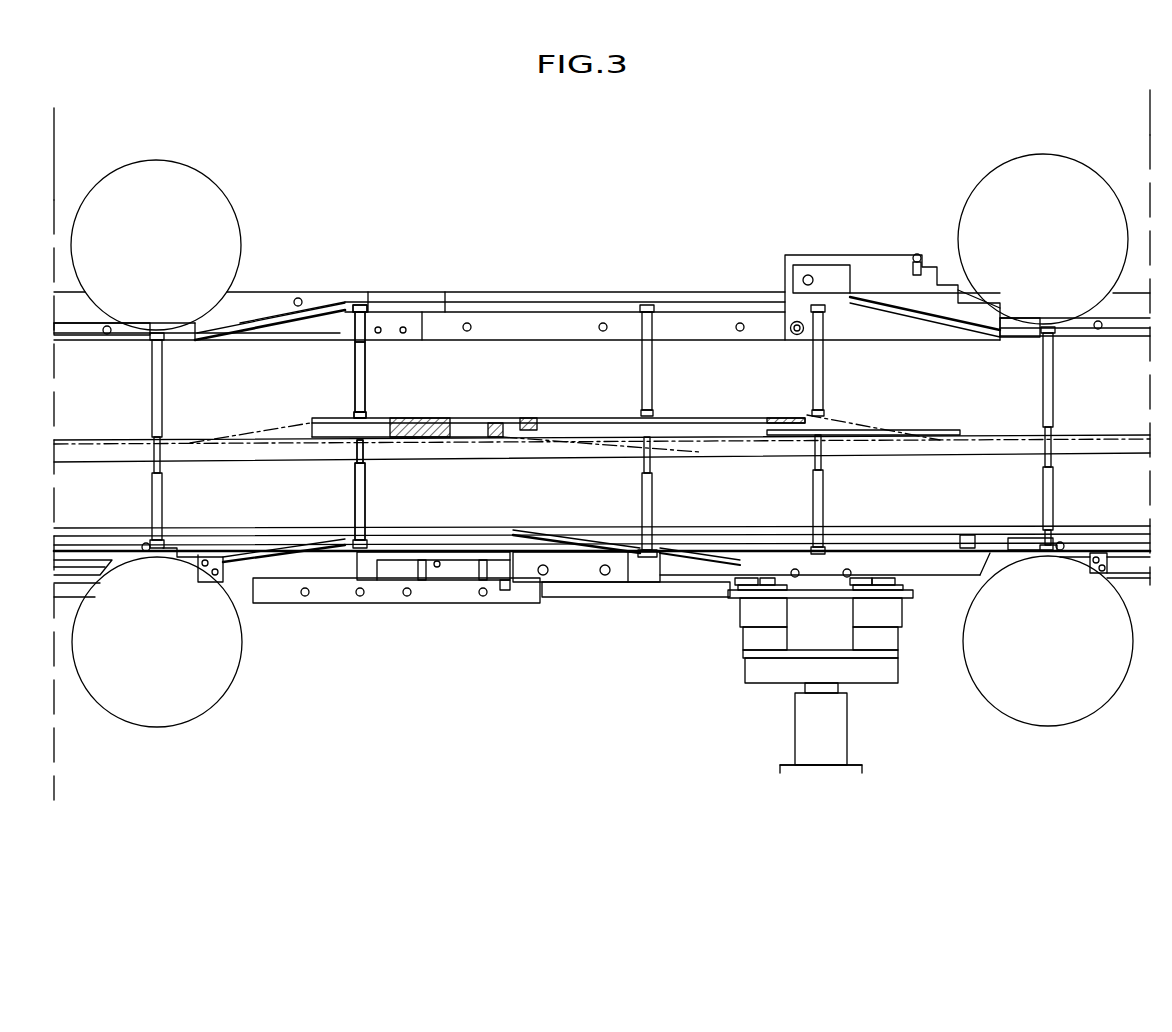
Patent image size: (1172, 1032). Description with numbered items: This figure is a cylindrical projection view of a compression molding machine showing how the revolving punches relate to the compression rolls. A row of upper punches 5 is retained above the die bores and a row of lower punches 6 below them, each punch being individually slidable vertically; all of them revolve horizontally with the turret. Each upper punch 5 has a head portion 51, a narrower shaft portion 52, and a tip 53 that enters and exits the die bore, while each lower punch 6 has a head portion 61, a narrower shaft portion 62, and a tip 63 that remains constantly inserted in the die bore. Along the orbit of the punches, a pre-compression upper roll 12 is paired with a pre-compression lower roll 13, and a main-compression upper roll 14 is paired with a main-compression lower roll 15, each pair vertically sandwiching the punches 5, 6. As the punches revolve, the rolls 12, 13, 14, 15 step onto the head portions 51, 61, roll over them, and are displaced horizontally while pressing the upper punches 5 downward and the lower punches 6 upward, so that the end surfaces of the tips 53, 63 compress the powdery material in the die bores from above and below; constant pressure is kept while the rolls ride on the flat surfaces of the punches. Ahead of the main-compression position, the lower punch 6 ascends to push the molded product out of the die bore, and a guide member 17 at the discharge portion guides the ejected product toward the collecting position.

The pre-compression upper roll 12 is at (1043, 154).
The pre-compression lower roll 13 is at (1048, 726).
The main-compression upper roll 14 is at (155, 158).
The main-compression lower roll 15 is at (157, 727).
The upper punch 5 is at (168, 388).
The lower punch 6 is at (168, 503).
The guide member 17 is at (333, 419).
The head portion 51 is at (362, 305).
The shaft portion 52 is at (367, 382).
The tip 53 is at (367, 413).
The head portion 61 is at (362, 550).
The shaft portion 62 is at (367, 490).
The tip 63 is at (366, 452).